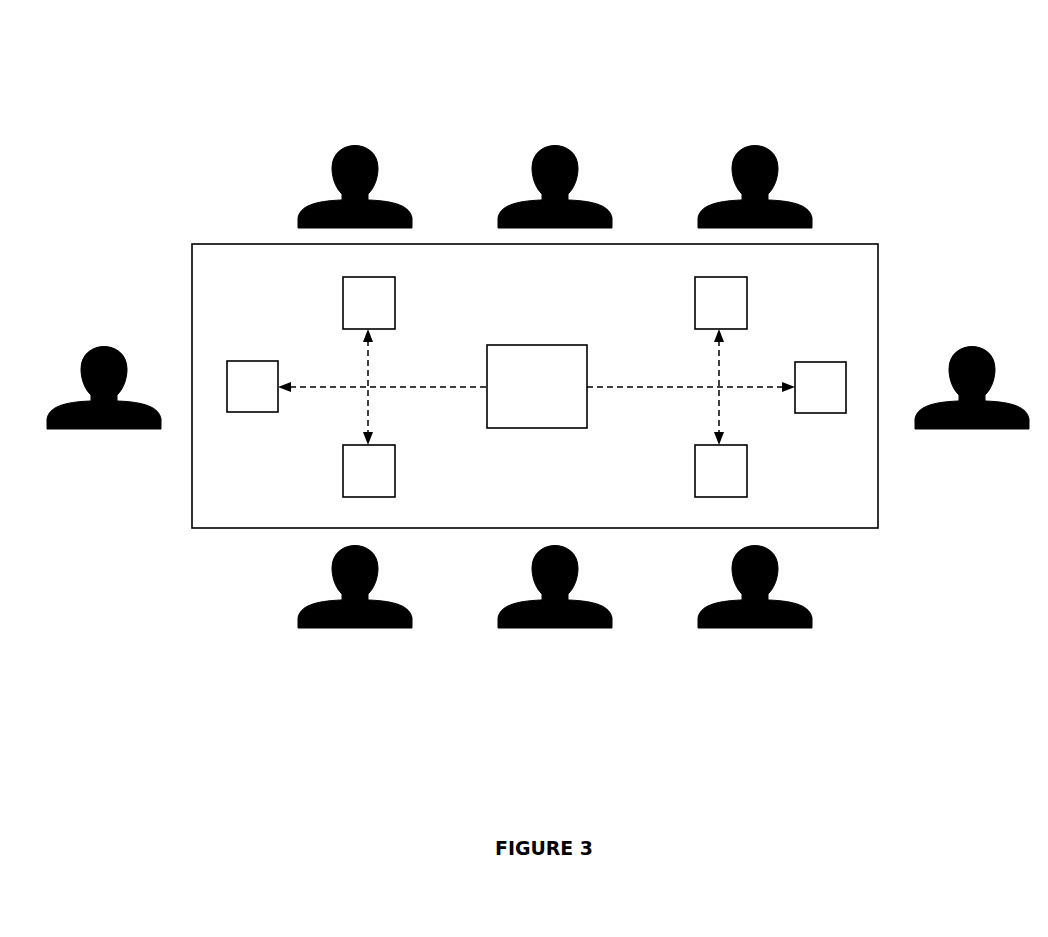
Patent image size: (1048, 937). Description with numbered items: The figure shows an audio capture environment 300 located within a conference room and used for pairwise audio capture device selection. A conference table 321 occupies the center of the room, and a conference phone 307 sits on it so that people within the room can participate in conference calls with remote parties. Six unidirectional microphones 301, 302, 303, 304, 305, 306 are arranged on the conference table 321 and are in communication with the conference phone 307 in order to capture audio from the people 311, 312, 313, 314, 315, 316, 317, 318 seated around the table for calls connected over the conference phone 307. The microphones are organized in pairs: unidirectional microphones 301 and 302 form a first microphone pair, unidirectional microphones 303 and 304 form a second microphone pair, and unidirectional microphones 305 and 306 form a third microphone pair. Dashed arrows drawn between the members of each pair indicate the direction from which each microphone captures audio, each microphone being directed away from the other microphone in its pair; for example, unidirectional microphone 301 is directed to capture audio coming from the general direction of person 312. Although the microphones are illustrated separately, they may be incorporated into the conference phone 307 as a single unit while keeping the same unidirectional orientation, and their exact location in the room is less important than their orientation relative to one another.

The audio capture environment 300 is at (93, 80).
The unidirectional microphone 301 is at (354, 323).
The unidirectional microphone 302 is at (354, 491).
The unidirectional microphone 303 is at (706, 323).
The unidirectional microphone 304 is at (706, 491).
The unidirectional microphone 305 is at (237, 407).
The unidirectional microphone 306 is at (805, 408).
The conference phone 307 is at (522, 417).
The person 311 is at (70, 403).
The person 312 is at (323, 202).
The person 313 is at (523, 203).
The person 314 is at (723, 203).
The person 315 is at (940, 403).
The person 316 is at (723, 603).
The person 317 is at (523, 603).
The person 318 is at (323, 603).
The conference table 321 is at (580, 290).